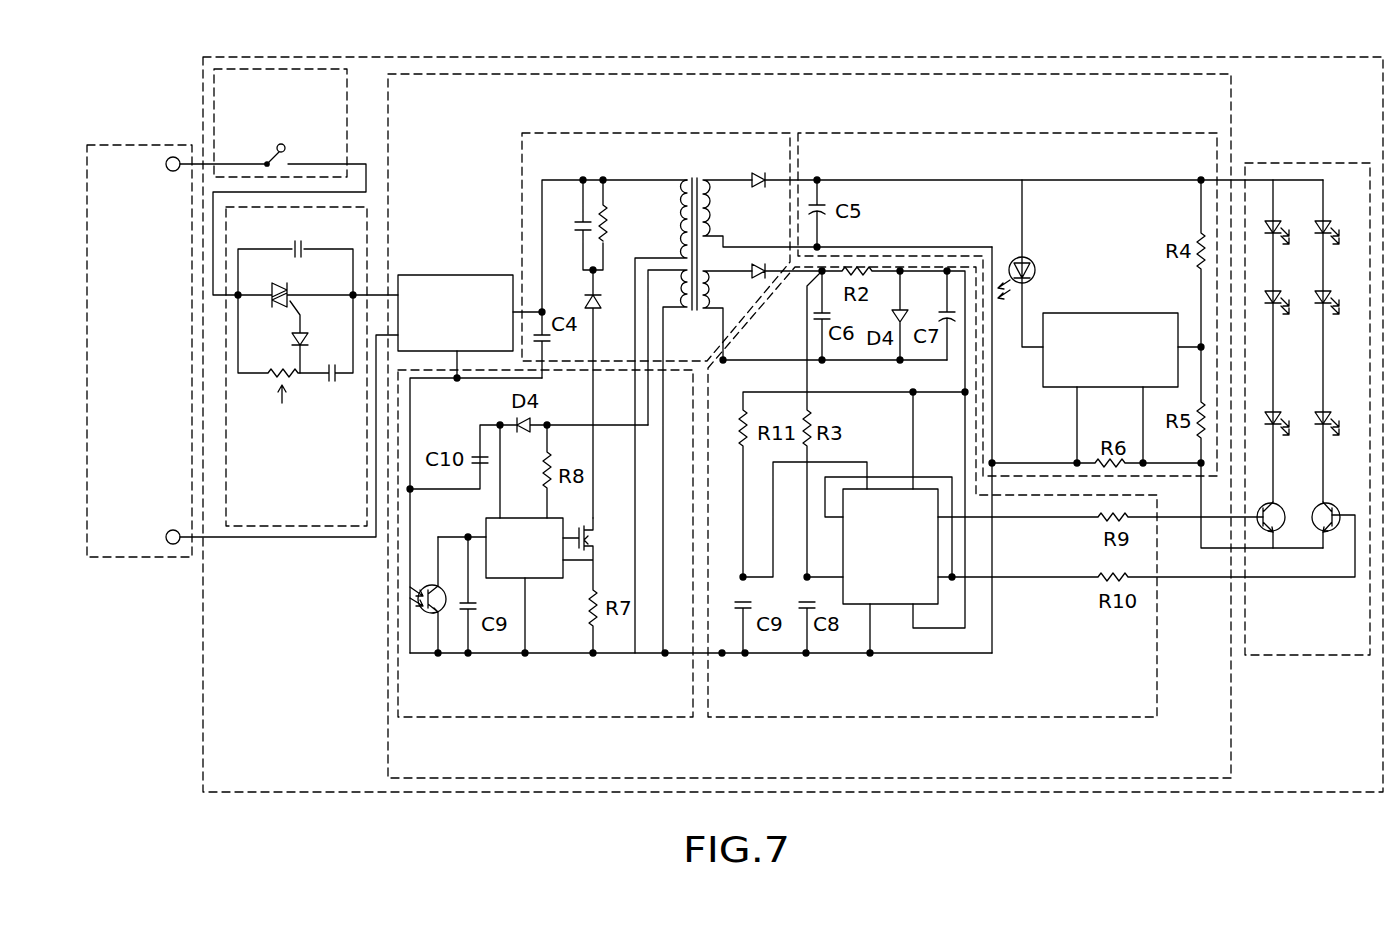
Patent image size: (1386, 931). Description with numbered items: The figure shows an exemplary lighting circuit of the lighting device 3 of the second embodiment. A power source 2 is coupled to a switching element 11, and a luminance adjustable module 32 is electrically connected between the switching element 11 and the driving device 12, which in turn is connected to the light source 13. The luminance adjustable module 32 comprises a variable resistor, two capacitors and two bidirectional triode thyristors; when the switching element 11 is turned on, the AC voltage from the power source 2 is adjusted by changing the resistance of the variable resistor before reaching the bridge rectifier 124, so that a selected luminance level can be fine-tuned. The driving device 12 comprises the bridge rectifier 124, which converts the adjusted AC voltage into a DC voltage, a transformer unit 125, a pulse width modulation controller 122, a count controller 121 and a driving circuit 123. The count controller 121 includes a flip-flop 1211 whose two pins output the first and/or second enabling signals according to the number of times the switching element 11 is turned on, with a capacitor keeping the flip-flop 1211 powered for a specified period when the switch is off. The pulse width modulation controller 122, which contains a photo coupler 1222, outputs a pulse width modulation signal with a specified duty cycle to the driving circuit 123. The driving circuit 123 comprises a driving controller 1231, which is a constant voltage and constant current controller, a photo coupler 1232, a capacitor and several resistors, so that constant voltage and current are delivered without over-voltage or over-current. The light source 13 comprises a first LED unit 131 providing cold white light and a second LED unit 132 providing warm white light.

The power source 2 is at (136, 571).
The lighting device 3 is at (199, 647).
The switching element 11 is at (214, 110).
The driving device 12 is at (385, 575).
The light source 13 is at (1297, 152).
The luminance adjustable module 32 is at (311, 542).
The count controller 121 is at (1016, 728).
The pulse width modulation controller 122 is at (623, 728).
The driving circuit 123 is at (991, 122).
The bridge rectifier 124 is at (445, 275).
The transformer unit 125 is at (704, 121).
The first LED unit 131 is at (1279, 220).
The second LED unit 132 is at (1329, 220).
The flip-flop 1211 is at (883, 590).
The photo coupler 1222 is at (420, 607).
The driving controller 1231 is at (1112, 313).
The photo coupler 1232 is at (1031, 260).